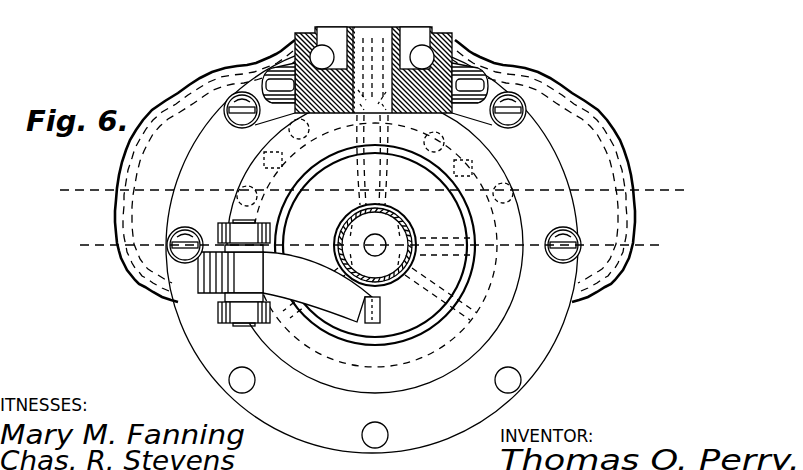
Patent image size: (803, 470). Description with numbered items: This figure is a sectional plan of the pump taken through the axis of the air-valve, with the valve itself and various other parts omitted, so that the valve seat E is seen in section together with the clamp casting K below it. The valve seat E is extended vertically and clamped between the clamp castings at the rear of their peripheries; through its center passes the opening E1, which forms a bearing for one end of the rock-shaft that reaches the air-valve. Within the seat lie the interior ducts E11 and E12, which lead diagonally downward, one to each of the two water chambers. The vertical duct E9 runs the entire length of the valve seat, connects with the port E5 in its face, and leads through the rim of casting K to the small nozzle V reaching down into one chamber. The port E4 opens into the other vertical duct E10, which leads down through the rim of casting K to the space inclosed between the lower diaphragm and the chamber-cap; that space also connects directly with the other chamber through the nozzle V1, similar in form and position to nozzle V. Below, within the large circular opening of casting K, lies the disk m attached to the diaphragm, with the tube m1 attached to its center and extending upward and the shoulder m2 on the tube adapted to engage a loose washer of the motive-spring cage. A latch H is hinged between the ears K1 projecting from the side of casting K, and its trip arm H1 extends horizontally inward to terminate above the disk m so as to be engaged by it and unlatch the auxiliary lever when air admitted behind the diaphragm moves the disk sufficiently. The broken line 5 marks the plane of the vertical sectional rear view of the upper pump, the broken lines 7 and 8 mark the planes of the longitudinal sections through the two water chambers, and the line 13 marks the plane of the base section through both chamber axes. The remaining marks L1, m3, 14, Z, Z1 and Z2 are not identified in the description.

The valve seat E is at (373, 65).
The opening E1 is at (372, 74).
The valve-seat port E4 is at (332, 48).
The valve-seat port E5 is at (415, 48).
The vertical duct E9 is at (422, 57).
The vertical duct E10 is at (322, 57).
The interior duct E11 is at (278, 83).
The duct E12 is at (470, 83).
The clamp casting K is at (372, 247).
The ears K1 is at (244, 273).
The side lobes L1 is at (375, 171).
The latch H is at (285, 283).
The trip arm H1 is at (363, 310).
The disk m is at (375, 245).
The tube m1 is at (413, 236).
The shoulder m2 is at (406, 254).
The shaft m3 is at (375, 245).
The nozzle V is at (299, 129).
The nozzle V1 is at (434, 142).
The screws Z is at (375, 407).
The side screws Z1 is at (374, 245).
The upper screws Z2 is at (375, 110).
The section line 13 is at (381, 177).
The section line 5 is at (372, 246).
The section line 7 is at (452, 34).
The section line 8 is at (296, 36).
The port openings 14 is at (512, 202).